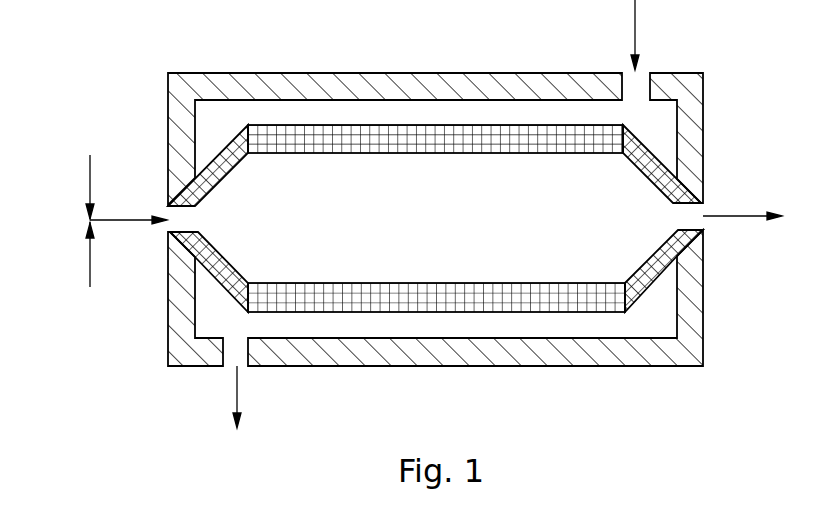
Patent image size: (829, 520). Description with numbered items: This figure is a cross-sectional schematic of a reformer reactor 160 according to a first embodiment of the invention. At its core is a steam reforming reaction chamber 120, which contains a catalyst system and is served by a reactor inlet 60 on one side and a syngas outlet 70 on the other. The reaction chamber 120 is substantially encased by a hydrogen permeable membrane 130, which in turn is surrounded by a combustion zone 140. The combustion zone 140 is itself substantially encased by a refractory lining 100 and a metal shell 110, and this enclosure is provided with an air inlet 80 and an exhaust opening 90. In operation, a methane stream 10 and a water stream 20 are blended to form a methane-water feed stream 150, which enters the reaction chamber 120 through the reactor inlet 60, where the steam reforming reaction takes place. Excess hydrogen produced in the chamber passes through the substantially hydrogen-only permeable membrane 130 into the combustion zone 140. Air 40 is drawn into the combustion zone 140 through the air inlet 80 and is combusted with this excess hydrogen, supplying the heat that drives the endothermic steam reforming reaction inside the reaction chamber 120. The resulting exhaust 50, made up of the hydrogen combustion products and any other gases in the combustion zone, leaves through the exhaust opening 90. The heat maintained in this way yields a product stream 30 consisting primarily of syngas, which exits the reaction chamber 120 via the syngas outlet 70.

The methane stream 10 is at (90, 173).
The water stream 20 is at (90, 266).
The product stream 30 is at (726, 216).
The air 40 is at (633, 26).
The exhaust 50 is at (237, 397).
The reactor inlet 60 is at (166, 211).
The syngas outlet 70 is at (705, 209).
The air inlet 80 is at (643, 68).
The exhaust opening 90 is at (229, 368).
The refractory lining 100 is at (402, 350).
The metal shell 110 is at (488, 365).
The steam reforming reaction chamber 120 is at (437, 240).
The hydrogen permeable membrane 130 is at (515, 140).
The combustion zone 140 is at (323, 112).
The methane-water feed stream 150 is at (138, 222).
The reformer reactor 160 is at (540, 414).